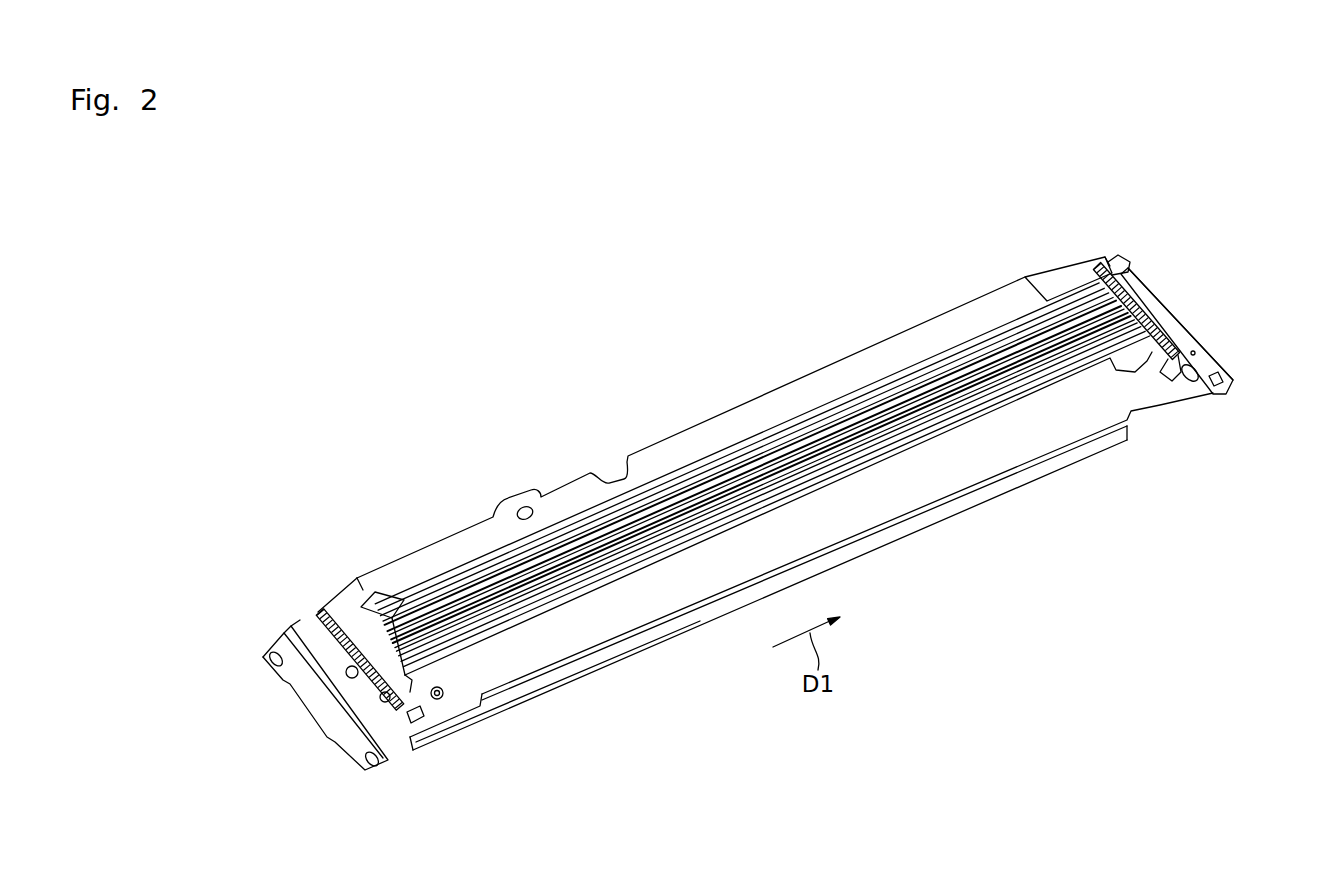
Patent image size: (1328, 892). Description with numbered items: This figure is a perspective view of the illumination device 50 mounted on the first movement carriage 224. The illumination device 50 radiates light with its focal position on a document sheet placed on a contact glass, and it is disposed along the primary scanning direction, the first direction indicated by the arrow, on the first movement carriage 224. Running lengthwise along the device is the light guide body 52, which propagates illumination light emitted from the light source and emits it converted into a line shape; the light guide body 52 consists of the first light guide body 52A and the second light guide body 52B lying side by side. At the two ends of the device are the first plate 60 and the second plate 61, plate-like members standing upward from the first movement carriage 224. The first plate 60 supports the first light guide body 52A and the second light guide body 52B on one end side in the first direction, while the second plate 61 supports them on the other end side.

The illumination device 50 is at (765, 476).
The light guide body 52 is at (762, 470).
The first light guide body 52A is at (688, 506).
The second light guide body 52B is at (760, 492).
The first plate 60 is at (1128, 264).
The second plate 61 is at (291, 615).
The first movement carriage 224 is at (1203, 348).